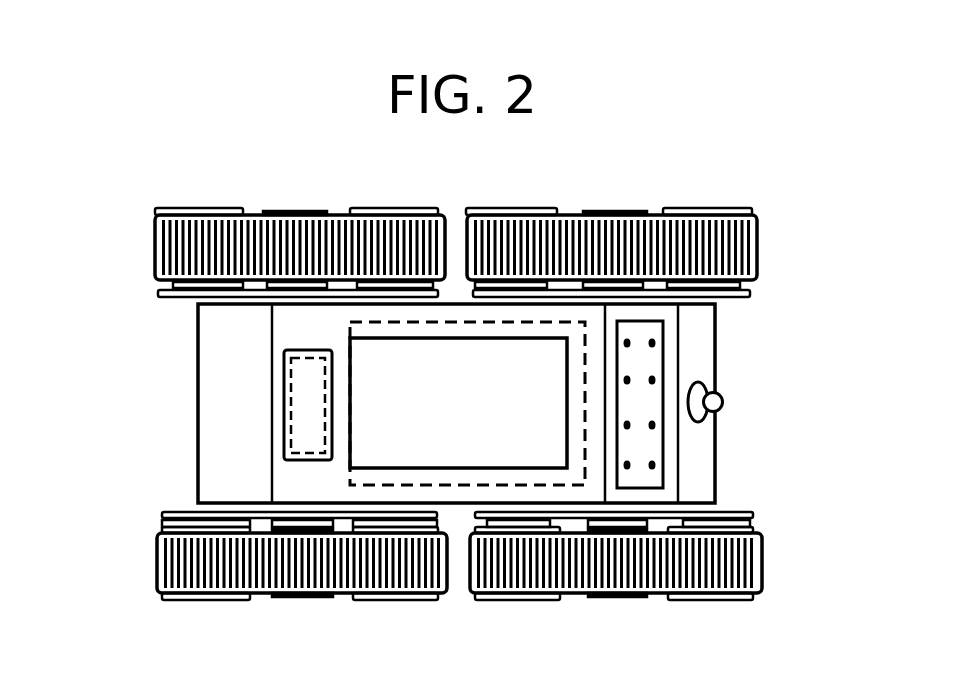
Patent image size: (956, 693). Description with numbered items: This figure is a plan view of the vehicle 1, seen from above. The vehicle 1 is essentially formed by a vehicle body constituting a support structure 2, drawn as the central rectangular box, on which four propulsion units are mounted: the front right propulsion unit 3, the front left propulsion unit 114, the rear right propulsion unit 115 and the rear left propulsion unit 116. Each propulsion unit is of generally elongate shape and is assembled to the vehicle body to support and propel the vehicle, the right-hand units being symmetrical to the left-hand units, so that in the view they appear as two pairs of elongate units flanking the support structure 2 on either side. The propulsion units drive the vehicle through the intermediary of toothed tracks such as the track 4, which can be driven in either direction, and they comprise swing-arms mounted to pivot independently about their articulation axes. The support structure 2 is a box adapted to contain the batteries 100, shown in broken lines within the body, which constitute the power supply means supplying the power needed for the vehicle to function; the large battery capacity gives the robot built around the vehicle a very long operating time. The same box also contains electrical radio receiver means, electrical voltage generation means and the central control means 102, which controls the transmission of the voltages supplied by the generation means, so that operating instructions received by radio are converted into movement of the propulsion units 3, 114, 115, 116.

The vehicle 1 is at (590, 186).
The support structure 2 is at (700, 449).
The propulsion unit 3 is at (233, 608).
The track 4 is at (158, 555).
The batteries 100 is at (448, 486).
The central control means 102 is at (283, 405).
The propulsion unit 114 is at (148, 245).
The propulsion unit 115 is at (837, 573).
The propulsion unit 116 is at (766, 242).